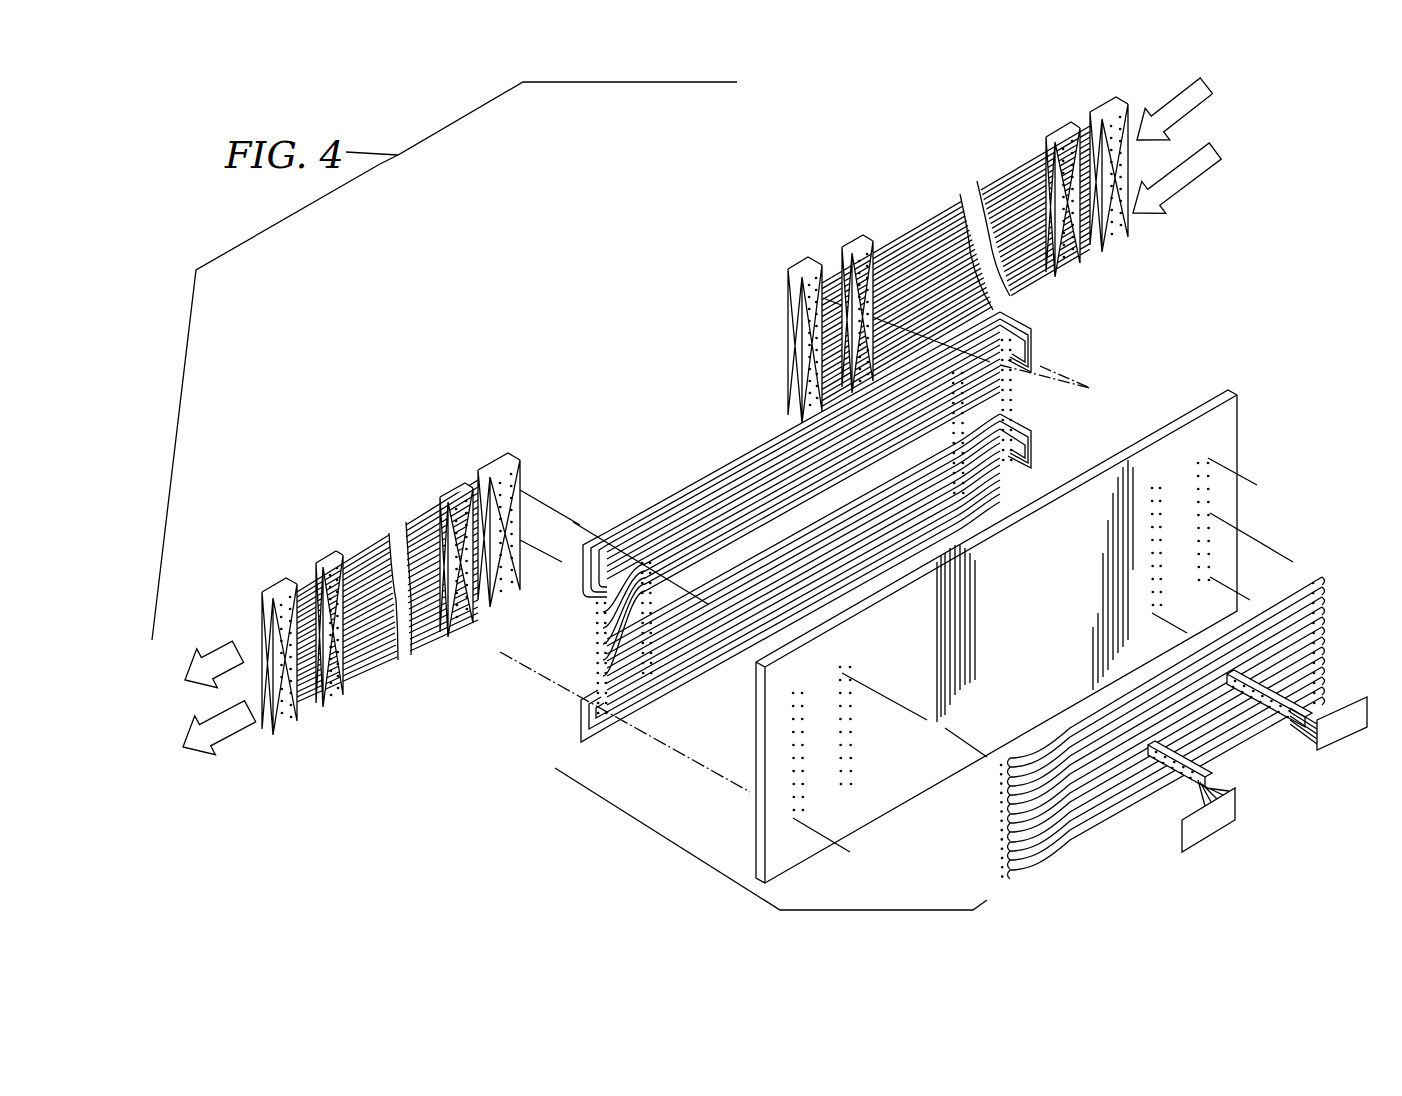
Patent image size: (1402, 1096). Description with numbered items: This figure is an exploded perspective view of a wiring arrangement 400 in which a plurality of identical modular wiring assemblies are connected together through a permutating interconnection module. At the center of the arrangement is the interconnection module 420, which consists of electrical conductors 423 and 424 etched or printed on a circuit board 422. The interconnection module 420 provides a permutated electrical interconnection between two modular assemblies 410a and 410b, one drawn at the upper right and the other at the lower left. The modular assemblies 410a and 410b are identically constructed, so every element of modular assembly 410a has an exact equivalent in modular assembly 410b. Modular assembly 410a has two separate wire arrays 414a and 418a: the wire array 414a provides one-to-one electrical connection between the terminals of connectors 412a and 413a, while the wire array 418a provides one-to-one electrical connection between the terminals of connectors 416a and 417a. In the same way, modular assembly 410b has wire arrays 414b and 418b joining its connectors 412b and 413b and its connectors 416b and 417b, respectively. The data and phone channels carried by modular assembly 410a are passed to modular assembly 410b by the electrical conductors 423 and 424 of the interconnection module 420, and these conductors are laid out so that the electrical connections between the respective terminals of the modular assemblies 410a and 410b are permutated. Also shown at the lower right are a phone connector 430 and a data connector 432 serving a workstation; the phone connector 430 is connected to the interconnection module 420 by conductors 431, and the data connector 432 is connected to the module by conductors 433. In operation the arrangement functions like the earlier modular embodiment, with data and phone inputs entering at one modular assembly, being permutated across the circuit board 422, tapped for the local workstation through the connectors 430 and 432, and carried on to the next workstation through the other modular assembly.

The wiring arrangement 400 is at (521, 205).
The modular assembly 410a is at (880, 182).
The modular assembly 410b is at (330, 455).
The connector 412a is at (1046, 136).
The connector 412b is at (451, 489).
The connector 413a is at (858, 251).
The connector 413b is at (327, 567).
The wire array 414a is at (993, 193).
The wire array 414b is at (417, 523).
The connector 416a is at (1108, 108).
The connector 416b is at (495, 456).
The connector 417a is at (818, 278).
The connector 417b is at (267, 596).
The wire array 418a is at (1083, 124).
The wire array 418b is at (470, 480).
The interconnection module 420 is at (733, 877).
The circuit board 422 is at (1241, 394).
The electrical conductors 423 is at (1070, 353).
The electrical conductors 424 is at (1321, 552).
The phone connector 430 is at (1207, 835).
The conductors 431 is at (1193, 793).
The data connector 432 is at (1334, 707).
The conductors 433 is at (1313, 733).